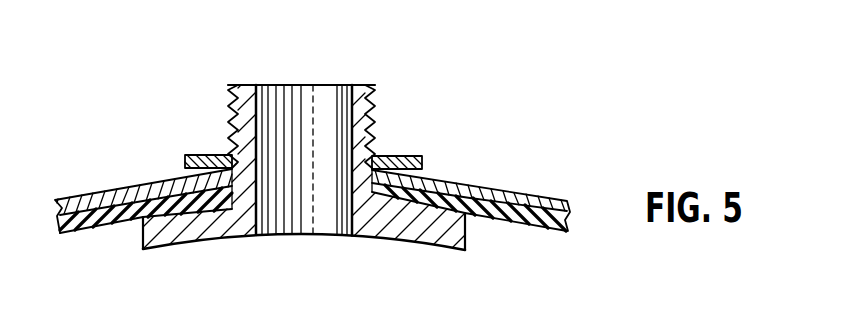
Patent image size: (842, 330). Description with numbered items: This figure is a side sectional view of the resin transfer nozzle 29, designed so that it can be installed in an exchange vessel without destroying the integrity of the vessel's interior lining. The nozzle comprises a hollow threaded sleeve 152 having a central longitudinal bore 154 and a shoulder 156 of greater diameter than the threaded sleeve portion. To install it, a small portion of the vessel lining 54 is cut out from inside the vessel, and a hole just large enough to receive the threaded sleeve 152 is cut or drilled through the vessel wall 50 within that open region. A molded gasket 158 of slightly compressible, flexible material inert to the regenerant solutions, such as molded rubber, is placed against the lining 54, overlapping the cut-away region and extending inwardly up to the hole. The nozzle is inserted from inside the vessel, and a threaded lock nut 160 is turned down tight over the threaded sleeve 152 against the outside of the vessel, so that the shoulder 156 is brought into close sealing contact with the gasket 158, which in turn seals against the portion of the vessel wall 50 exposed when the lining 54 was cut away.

The resin transfer nozzle 29 is at (300, 255).
The vessel wall 50 is at (324, 225).
The vessel lining 54 is at (533, 222).
The threaded sleeve 152 is at (380, 120).
The central longitudinal bore 154 is at (320, 117).
The shoulder 156 is at (424, 235).
The molded gasket 158 is at (163, 215).
The threaded lock nut 160 is at (423, 158).